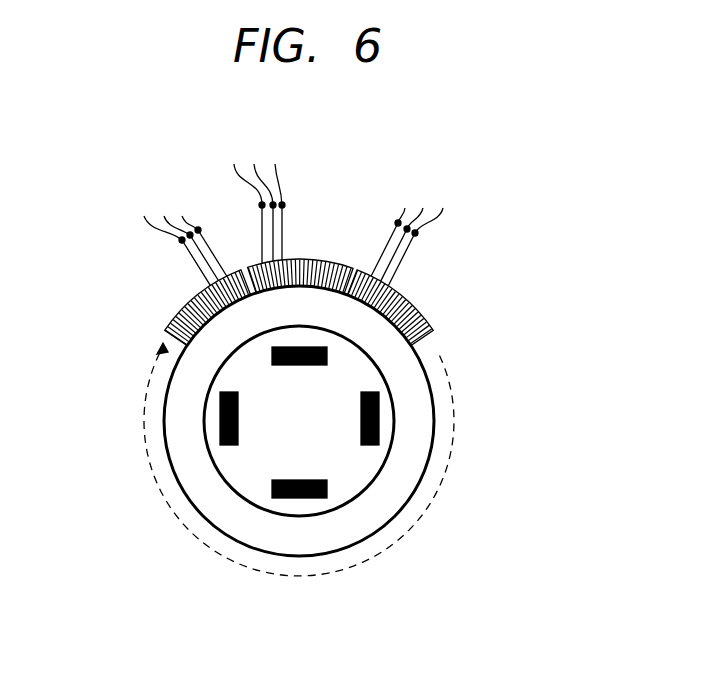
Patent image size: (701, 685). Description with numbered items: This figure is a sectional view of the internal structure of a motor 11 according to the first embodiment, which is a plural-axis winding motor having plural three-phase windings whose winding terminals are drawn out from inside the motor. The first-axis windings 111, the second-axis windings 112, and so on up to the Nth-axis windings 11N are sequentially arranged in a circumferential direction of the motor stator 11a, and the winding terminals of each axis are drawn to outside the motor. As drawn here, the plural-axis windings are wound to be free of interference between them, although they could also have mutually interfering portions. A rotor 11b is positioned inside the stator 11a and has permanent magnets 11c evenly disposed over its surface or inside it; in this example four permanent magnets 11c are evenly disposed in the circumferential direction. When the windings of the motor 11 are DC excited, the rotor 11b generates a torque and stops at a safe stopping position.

The motor 11 is at (203, 498).
The stator 11a is at (422, 487).
The rotor 11b is at (372, 377).
The permanent magnets 11c is at (300, 497).
The Nth-axis windings 11N is at (180, 317).
The first-axis windings 111 is at (320, 260).
The second-axis windings 112 is at (415, 303).